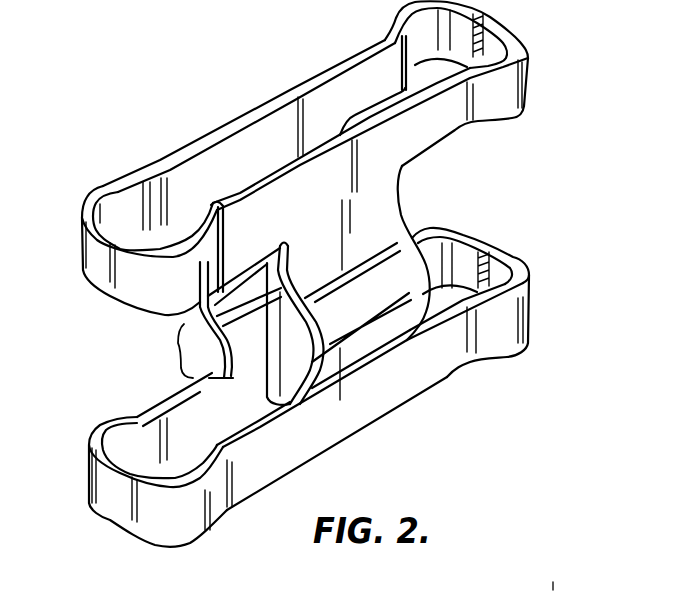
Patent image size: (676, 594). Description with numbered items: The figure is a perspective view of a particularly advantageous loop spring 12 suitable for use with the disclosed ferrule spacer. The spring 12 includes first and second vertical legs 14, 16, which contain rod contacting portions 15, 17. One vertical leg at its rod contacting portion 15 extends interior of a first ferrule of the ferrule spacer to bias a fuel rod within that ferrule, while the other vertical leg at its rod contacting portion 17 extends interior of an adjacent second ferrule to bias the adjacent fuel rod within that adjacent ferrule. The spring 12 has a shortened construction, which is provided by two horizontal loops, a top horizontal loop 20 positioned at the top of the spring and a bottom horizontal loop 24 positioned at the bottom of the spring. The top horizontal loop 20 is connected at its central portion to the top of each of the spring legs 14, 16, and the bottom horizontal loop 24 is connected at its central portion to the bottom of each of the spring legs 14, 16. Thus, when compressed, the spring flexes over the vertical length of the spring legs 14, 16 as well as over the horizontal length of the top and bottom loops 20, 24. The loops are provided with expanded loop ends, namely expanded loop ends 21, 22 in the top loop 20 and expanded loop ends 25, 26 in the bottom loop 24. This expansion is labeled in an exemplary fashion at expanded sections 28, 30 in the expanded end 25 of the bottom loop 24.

The spring 12 is at (232, 43).
The first vertical leg 14 is at (263, 330).
The rod contacting portion 15 is at (380, 307).
The second vertical leg 16 is at (168, 351).
The rod contacting portion 17 is at (211, 342).
The top horizontal loop 20 is at (308, 225).
The expanded loop end 21 is at (100, 258).
The expanded loop end 22 is at (513, 28).
The bottom horizontal loop 24 is at (379, 407).
The expanded loop end 25 is at (157, 513).
The expanded loop end 26 is at (532, 273).
The expanded section 28 is at (200, 522).
The expanded section 30 is at (88, 432).